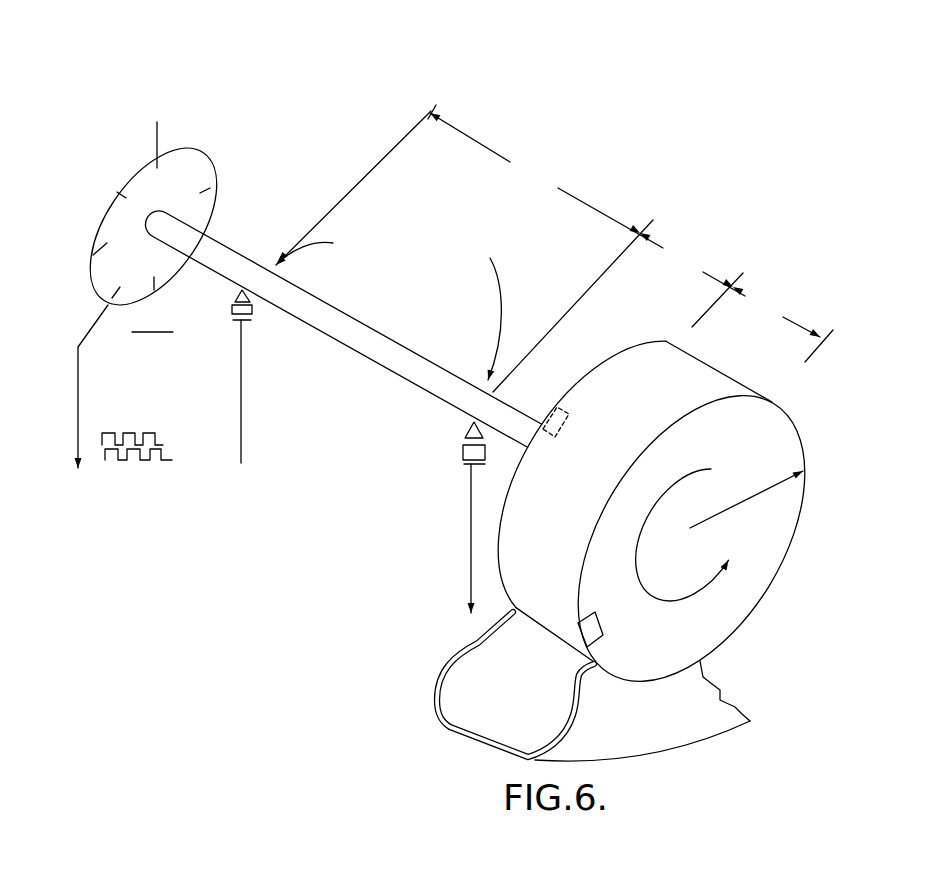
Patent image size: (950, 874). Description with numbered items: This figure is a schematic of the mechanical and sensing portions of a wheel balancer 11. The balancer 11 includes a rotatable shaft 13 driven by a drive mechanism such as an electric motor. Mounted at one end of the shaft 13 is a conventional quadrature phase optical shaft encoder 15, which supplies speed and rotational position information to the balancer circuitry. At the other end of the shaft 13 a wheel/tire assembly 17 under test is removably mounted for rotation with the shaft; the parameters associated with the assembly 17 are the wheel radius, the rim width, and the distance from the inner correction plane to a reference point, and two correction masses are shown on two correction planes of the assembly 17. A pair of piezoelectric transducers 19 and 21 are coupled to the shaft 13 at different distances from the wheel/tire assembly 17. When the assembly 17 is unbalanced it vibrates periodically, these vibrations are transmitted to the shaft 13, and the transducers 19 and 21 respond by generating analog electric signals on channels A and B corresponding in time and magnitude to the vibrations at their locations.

The wheel balancer 11 is at (655, 95).
The rotatable shaft 13 is at (358, 353).
The quadrature phase optical shaft encoder 15 is at (192, 165).
The wheel/tire assembly 17 is at (798, 527).
The piezoelectric transducer 19 is at (465, 428).
The piezoelectric transducer 21 is at (253, 306).